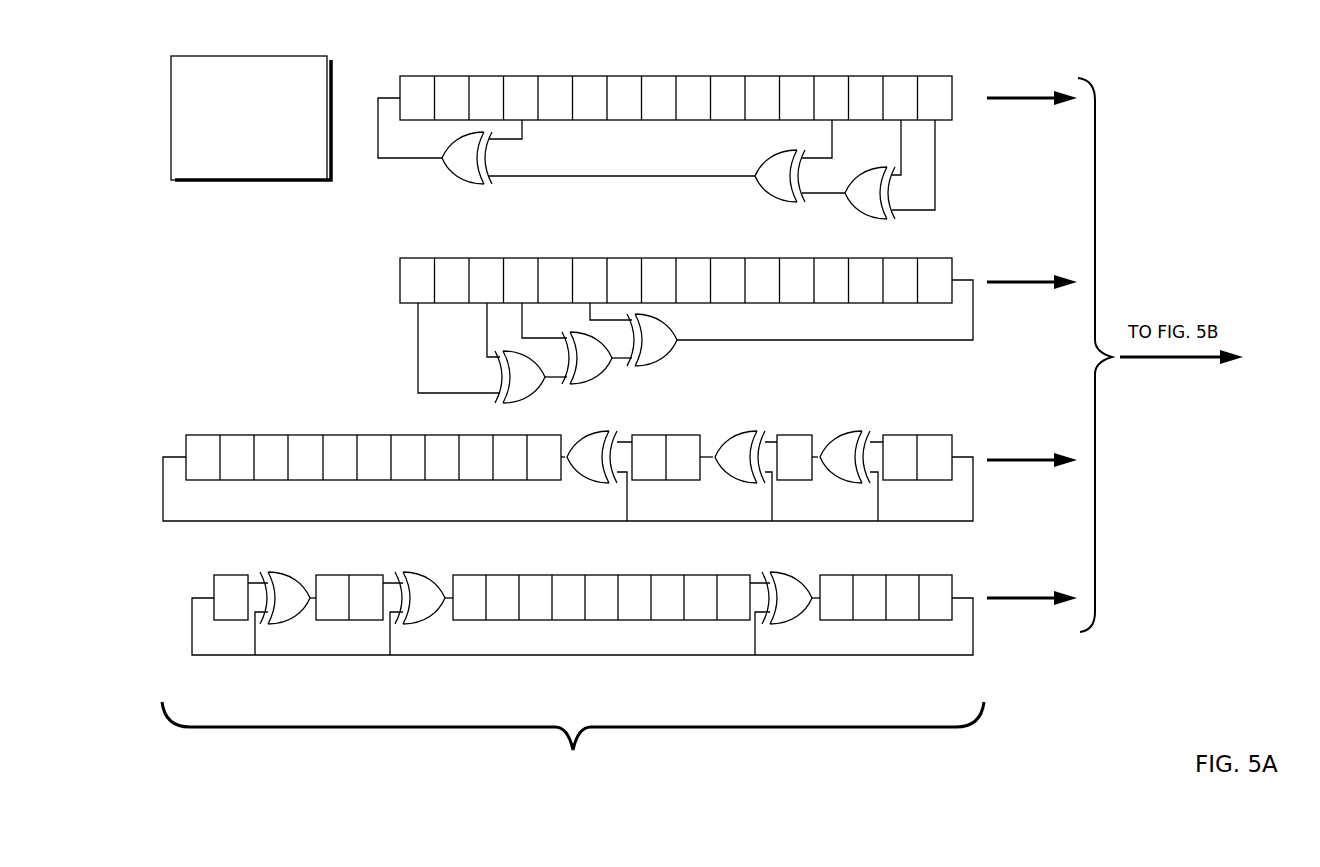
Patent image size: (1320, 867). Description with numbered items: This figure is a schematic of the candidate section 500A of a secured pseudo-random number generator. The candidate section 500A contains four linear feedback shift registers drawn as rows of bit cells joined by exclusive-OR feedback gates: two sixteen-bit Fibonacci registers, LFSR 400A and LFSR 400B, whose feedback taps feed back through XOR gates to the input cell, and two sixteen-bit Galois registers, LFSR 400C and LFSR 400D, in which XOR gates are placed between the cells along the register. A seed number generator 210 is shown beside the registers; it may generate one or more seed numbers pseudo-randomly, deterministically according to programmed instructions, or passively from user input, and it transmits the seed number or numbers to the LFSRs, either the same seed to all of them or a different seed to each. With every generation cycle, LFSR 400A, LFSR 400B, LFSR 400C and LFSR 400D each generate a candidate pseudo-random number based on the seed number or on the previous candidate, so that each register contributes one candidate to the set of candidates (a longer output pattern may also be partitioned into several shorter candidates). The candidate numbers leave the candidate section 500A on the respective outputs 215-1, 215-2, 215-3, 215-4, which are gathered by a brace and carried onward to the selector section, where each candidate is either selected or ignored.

The seed number generator 210 is at (266, 162).
The Fibonacci linear feedback shift register 400A is at (547, 76).
The Fibonacci linear feedback shift register 400B is at (568, 257).
The Galois linear feedback shift register 400C is at (305, 434).
The Galois linear feedback shift register 400D is at (560, 575).
The output 215-1 is at (1032, 87).
The output 215-2 is at (1032, 271).
The output 215-3 is at (1032, 449).
The output 215-4 is at (1032, 587).
The candidate section 500A is at (1250, 117).